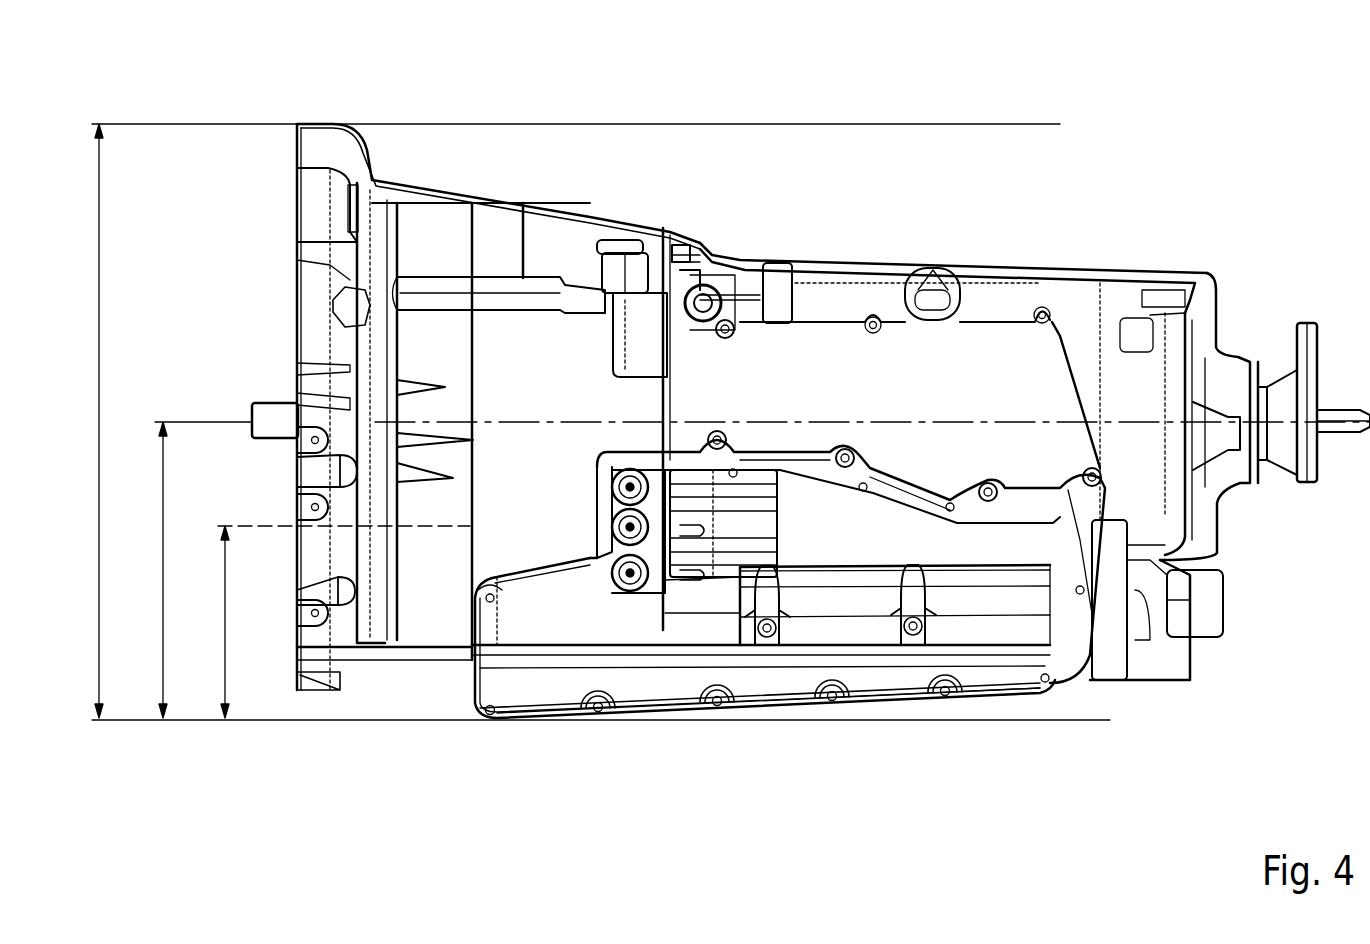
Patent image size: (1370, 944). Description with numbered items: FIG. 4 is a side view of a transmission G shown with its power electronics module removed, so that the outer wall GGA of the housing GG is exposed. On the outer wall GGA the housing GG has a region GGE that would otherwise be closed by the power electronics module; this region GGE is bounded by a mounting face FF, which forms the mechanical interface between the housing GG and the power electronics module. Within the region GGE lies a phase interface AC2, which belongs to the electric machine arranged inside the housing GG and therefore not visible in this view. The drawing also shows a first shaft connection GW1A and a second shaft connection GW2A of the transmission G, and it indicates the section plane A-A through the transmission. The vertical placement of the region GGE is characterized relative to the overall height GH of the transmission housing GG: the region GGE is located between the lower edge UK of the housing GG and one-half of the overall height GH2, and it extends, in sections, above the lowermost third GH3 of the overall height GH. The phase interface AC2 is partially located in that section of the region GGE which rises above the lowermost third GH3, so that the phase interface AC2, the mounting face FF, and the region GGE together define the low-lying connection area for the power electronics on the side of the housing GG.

The transmission G is at (1104, 167).
The housing GG is at (552, 243).
The outer wall GGA is at (957, 543).
The region GGE is at (673, 727).
The lower edge UK is at (500, 720).
The mounting face FF is at (807, 700).
The phase interface AC2 is at (600, 595).
The first shaft connection GW1A is at (273, 410).
The second shaft connection GW2A is at (1310, 323).
The overall height GH is at (78, 421).
The one-half of the overall height GH2 is at (184, 570).
The lowermost third GH3 is at (324, 622).
The section plane A- A is at (713, 775).